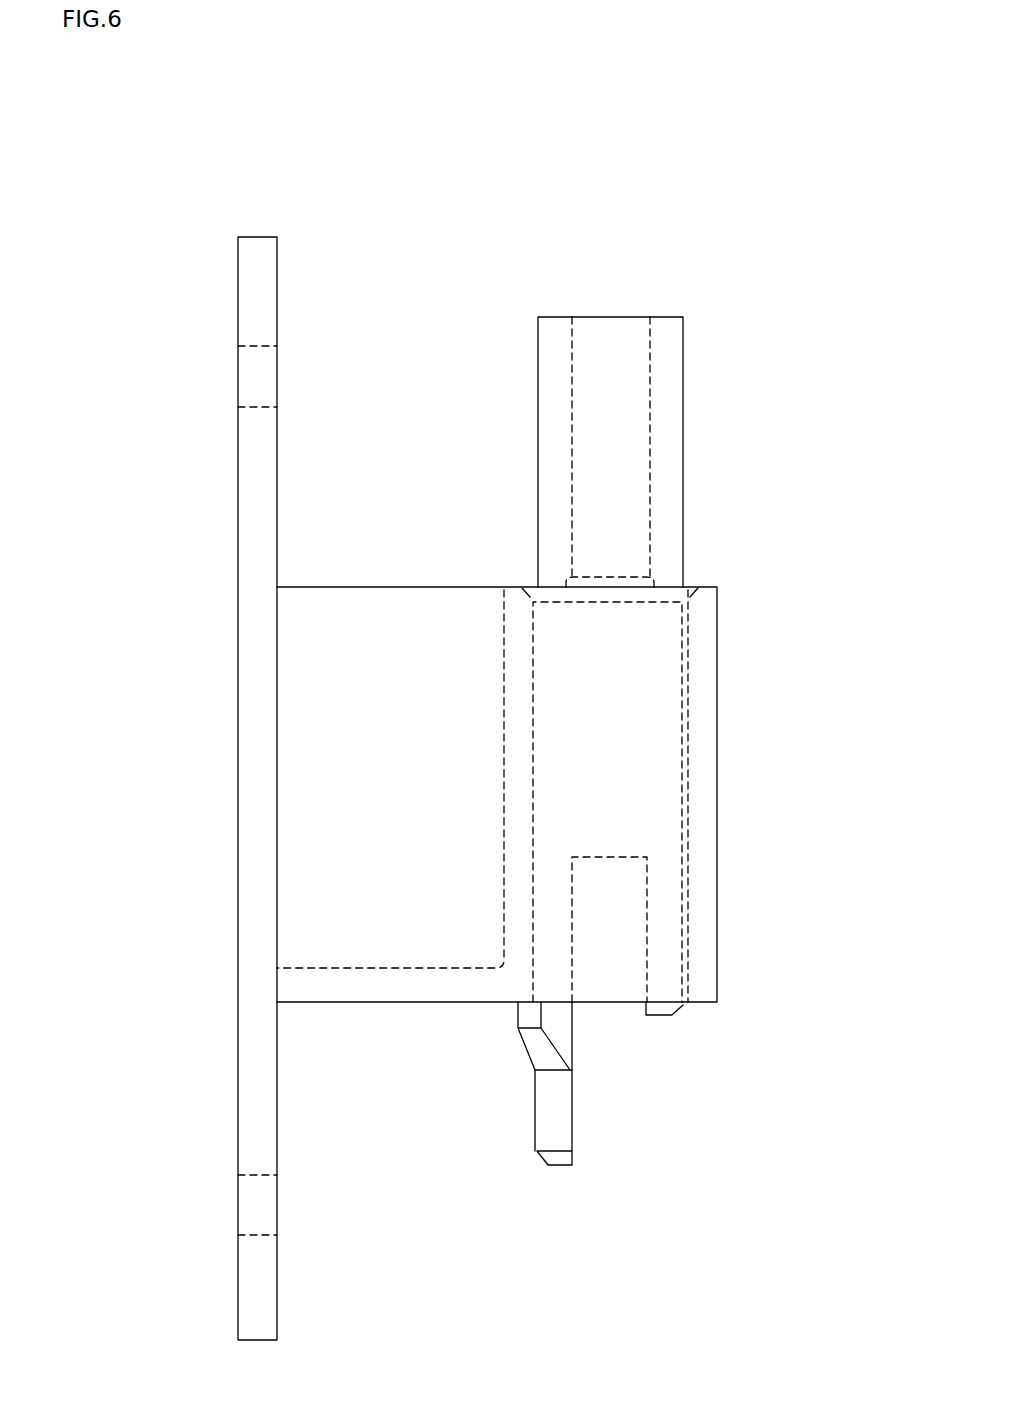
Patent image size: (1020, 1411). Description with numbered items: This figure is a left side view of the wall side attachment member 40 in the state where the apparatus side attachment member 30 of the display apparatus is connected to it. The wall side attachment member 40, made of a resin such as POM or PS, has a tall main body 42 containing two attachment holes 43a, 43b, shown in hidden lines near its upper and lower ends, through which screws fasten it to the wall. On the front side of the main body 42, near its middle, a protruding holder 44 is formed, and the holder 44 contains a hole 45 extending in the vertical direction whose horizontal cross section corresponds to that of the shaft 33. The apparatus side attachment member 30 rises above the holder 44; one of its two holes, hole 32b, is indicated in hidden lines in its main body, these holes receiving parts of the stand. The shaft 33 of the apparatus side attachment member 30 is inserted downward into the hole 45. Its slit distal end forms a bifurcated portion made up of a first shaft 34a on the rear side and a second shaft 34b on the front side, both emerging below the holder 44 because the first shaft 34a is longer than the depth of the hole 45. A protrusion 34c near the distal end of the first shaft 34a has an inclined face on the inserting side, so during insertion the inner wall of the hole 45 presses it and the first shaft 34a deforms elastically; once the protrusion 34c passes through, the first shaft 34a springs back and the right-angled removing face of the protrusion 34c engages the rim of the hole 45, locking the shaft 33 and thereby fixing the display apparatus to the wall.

The apparatus side attachment member 30 is at (654, 438).
The hole 32b is at (650, 448).
The shaft 33 is at (688, 805).
The first shaft 34a is at (560, 1166).
The second shaft 34b is at (653, 1017).
The protrusion 34c is at (517, 1017).
The wall side attachment member 40 is at (251, 775).
The main body 42 is at (277, 500).
The attachment hole 43a is at (277, 372).
The attachment hole 43b is at (277, 1203).
The holder 44 is at (543, 794).
The hole 45 is at (688, 655).